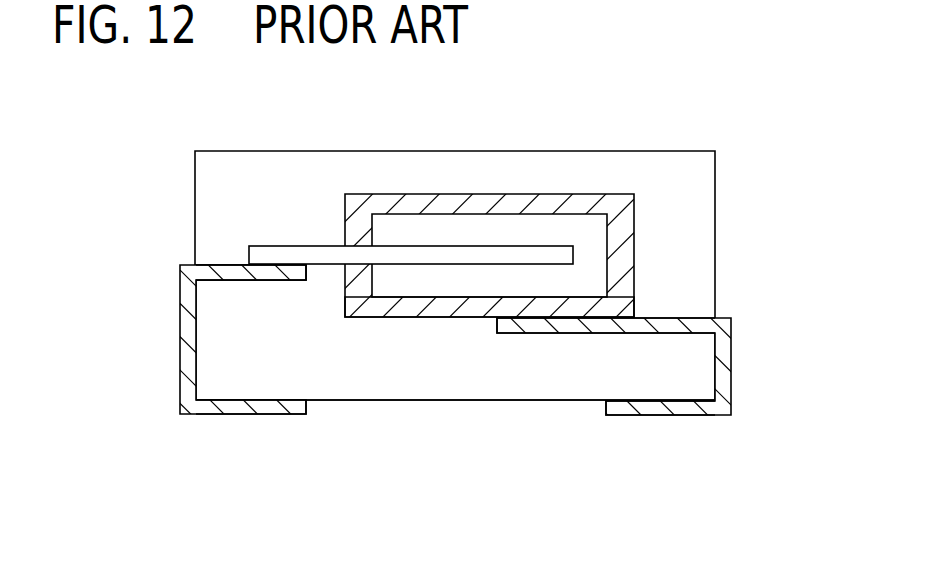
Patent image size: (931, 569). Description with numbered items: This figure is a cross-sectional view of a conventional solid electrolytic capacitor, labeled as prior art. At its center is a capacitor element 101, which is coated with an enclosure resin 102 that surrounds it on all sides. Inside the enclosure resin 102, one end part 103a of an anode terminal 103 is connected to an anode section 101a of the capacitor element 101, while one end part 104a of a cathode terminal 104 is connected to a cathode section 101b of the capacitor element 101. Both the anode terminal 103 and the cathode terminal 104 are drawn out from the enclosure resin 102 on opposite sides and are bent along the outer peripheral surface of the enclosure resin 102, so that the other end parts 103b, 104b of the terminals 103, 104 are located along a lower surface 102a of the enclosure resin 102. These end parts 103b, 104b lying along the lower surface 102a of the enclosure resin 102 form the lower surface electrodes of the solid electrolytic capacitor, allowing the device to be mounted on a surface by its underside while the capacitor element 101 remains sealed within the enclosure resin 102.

The capacitor element 101 is at (523, 193).
The anode section 101a is at (303, 255).
The cathode section 101b is at (433, 318).
The enclosure resin 102 is at (662, 175).
The lower surface 102a is at (363, 400).
The anode terminal 103 is at (189, 328).
The one end part of anode terminal 103a is at (233, 272).
The other end part of anode terminal 103b is at (265, 407).
The cathode terminal 104 is at (723, 351).
The one end part of cathode terminal 104a is at (567, 323).
The other end part of cathode terminal 104b is at (683, 408).